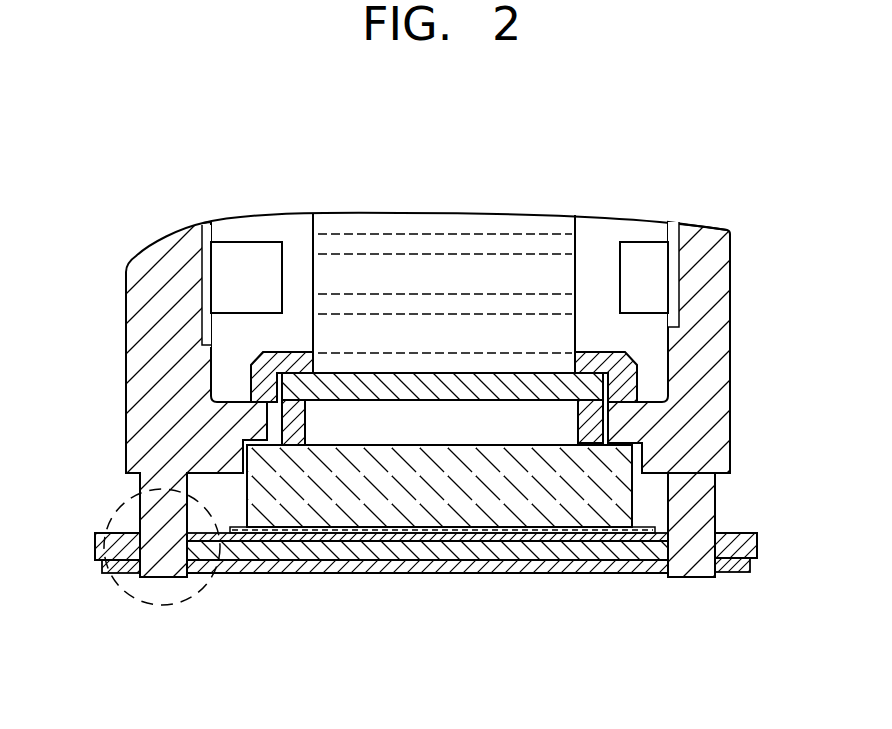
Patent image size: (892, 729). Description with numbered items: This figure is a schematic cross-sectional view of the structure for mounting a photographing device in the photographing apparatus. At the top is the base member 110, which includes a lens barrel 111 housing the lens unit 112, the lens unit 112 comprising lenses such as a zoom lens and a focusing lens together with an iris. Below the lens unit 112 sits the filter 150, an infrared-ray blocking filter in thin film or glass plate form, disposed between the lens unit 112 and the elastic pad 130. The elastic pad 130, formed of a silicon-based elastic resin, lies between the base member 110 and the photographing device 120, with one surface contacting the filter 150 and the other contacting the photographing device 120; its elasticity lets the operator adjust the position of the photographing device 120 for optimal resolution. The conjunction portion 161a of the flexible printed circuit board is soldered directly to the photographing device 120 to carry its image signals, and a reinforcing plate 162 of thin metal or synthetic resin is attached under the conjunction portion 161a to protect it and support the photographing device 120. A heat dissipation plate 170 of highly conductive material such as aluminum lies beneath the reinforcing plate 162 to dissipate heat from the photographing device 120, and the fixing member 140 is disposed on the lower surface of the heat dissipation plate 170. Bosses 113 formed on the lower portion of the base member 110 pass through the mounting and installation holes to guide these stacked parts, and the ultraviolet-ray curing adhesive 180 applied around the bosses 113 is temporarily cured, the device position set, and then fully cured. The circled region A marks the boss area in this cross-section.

The base member 110 is at (714, 314).
The lens barrel 111 is at (577, 237).
The lens unit 112 is at (362, 353).
The boss 113 is at (692, 560).
The photographing device 120 is at (292, 512).
The elastic pad 130 is at (288, 421).
The fixing member 140 is at (427, 568).
The filter 150 is at (280, 375).
The conjunction portion 161a is at (497, 533).
The reinforcing plate 162 is at (569, 536).
The heat dissipation plate 170 is at (358, 548).
The adhesive 180 is at (718, 573).
The detail region A is at (163, 606).